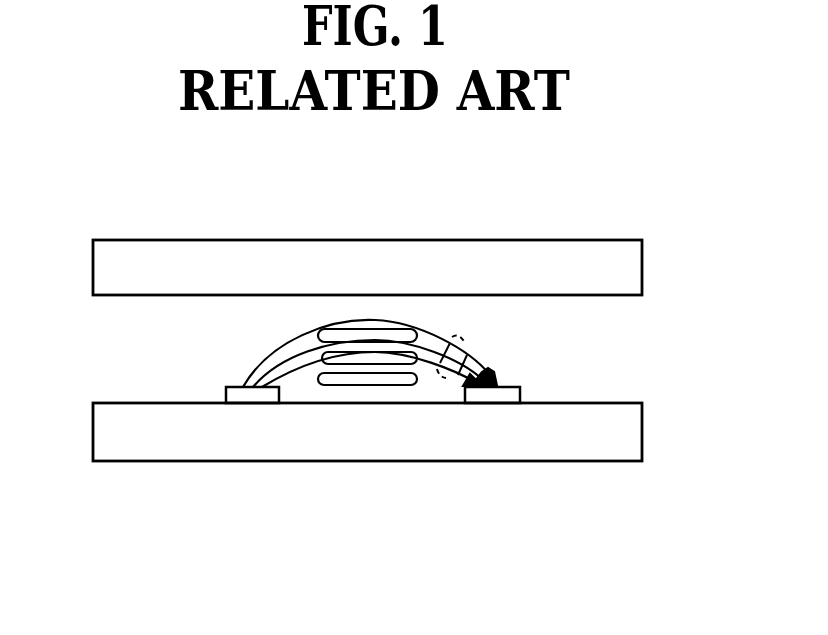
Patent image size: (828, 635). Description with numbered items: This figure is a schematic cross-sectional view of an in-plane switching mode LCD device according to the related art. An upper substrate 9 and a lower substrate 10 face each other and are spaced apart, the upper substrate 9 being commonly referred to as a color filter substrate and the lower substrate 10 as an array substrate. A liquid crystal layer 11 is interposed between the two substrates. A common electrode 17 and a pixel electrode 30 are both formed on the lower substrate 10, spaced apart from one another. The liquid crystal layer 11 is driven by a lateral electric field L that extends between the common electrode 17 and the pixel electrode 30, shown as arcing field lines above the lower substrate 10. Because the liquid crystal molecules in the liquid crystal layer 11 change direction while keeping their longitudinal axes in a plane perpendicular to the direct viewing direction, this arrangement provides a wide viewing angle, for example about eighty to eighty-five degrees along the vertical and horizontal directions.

The upper substrate 9 is at (667, 240).
The lower substrate 10 is at (667, 405).
The liquid crystal layer 11 is at (667, 297).
The pixel electrode 30 is at (250, 398).
The common electrode 17 is at (502, 397).
The lateral electric field L is at (439, 374).